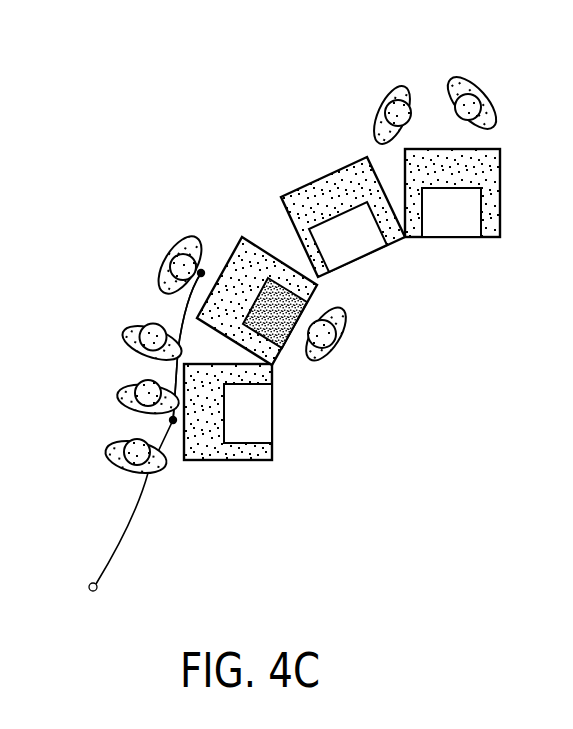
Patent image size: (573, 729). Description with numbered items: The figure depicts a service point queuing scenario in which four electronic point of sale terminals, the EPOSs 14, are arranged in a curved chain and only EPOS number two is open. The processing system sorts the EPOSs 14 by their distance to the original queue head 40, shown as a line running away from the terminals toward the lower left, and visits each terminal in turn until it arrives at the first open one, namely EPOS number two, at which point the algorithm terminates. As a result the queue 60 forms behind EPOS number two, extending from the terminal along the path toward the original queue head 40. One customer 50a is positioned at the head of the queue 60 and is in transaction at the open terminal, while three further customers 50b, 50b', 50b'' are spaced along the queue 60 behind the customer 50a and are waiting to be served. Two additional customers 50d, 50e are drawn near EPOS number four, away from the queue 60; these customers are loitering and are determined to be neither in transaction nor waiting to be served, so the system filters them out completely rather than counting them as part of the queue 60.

The EPOS 14 is at (272, 420).
The original queue head 40 is at (148, 473).
The queue 60 is at (182, 315).
The customer 50a is at (167, 257).
The customer 50b is at (120, 337).
The customer 50b' is at (112, 392).
The customer 50b'' is at (97, 451).
The customer 50d is at (390, 85).
The customer 50e is at (458, 80).